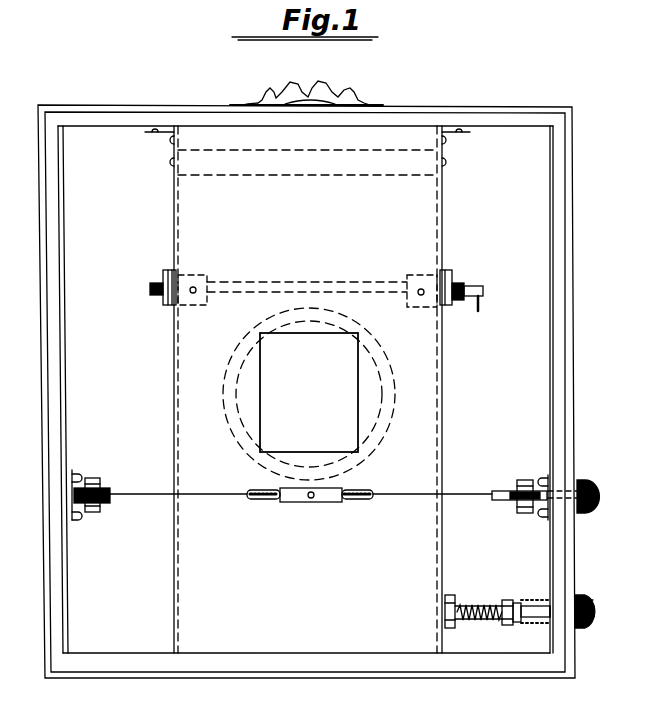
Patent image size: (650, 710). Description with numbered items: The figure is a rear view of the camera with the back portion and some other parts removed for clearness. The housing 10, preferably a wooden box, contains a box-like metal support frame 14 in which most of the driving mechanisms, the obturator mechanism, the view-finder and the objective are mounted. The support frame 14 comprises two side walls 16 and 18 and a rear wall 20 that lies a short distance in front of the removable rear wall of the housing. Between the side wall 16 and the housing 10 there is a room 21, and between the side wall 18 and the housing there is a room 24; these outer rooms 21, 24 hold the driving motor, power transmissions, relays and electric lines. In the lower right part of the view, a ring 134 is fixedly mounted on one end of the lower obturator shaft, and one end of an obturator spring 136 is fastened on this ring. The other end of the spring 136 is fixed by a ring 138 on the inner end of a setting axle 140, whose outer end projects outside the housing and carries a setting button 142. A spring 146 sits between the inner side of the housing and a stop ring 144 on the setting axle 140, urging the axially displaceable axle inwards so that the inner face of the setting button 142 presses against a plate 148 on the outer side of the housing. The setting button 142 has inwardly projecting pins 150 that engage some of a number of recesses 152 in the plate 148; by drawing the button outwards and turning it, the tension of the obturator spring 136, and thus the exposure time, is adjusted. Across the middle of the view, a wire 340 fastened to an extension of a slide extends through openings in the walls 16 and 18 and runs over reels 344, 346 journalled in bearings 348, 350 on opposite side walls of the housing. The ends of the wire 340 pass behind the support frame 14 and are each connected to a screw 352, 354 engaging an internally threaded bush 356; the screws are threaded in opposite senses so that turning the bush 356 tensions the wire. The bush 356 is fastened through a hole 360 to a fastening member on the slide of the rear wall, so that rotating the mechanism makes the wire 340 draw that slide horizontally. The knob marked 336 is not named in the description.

The housing 10 is at (568, 232).
The support frame 14 is at (307, 315).
The side wall 16 is at (175, 208).
The side wall 18 is at (447, 208).
The rear wall 20 is at (443, 400).
The room 21 is at (111, 352).
The room 24 is at (506, 337).
The ring 134 is at (460, 623).
The obturator spring 136 is at (473, 605).
The ring 138 is at (503, 603).
The setting axle 140 is at (528, 605).
The setting button 142 is at (593, 607).
The stop ring 144 is at (503, 625).
The spring 146 is at (535, 624).
The plate 148 is at (580, 627).
The pins 150 is at (582, 600).
The recesses 152 is at (586, 625).
The adjusting knob 336 is at (590, 497).
The wire 340 is at (145, 483).
The reel 344 is at (102, 490).
The reel 346 is at (512, 490).
The bearing 348 is at (80, 510).
The bearing 350 is at (535, 510).
The screw 352 is at (263, 500).
The screw 354 is at (360, 500).
The bush 356 is at (293, 500).
The hole 360 is at (312, 500).